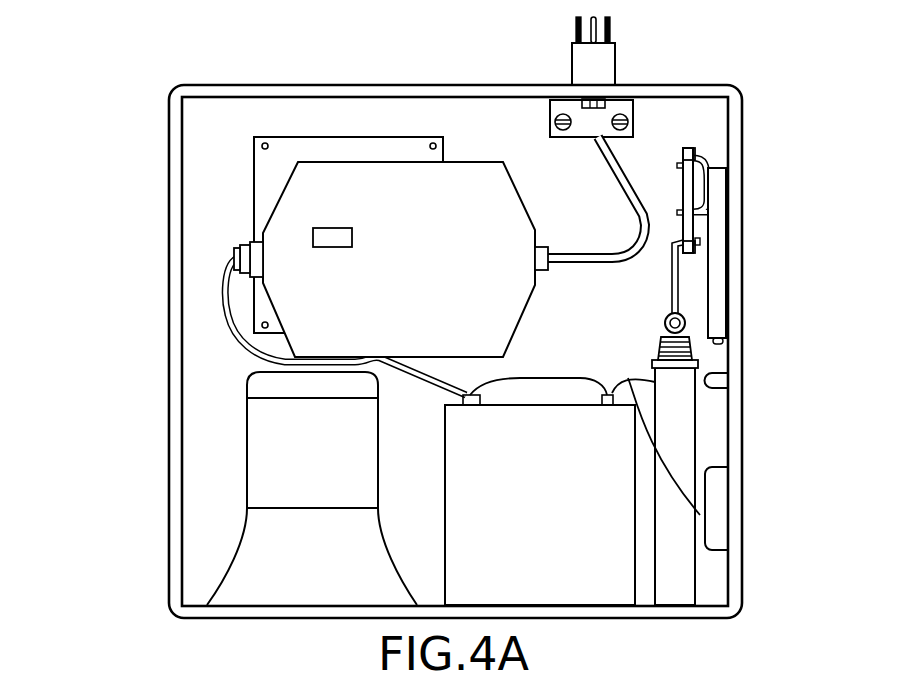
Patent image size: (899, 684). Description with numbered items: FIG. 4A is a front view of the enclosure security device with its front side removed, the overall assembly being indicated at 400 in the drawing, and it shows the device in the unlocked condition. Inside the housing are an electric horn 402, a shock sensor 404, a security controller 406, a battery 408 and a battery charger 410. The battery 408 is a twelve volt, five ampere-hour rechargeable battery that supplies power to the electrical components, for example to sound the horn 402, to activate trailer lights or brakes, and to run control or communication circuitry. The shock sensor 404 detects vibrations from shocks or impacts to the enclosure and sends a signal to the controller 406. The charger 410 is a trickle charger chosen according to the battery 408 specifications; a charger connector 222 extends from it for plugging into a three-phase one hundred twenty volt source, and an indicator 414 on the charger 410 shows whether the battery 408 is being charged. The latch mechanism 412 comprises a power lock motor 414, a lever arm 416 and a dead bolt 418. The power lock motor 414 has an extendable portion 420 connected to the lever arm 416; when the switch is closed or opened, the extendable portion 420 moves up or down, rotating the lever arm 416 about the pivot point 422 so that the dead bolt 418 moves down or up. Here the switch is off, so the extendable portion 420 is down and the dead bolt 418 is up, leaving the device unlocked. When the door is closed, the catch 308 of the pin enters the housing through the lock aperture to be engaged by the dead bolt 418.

The alarm unit housing 400 is at (110, 114).
The charger connector 222 is at (568, 66).
The latch mechanism 412 is at (626, 283).
The security controller 406 is at (410, 160).
The battery charger 410 is at (493, 348).
The power lock motor 414 is at (352, 238).
The extendable portion 420 is at (658, 350).
The lever arm 416 is at (683, 154).
The pivot point 422 is at (678, 210).
The dead bolt 418 is at (720, 255).
The catch 308 is at (722, 380).
The shock sensor 404 is at (720, 517).
The electric horn 402 is at (375, 593).
The battery 408 is at (622, 600).